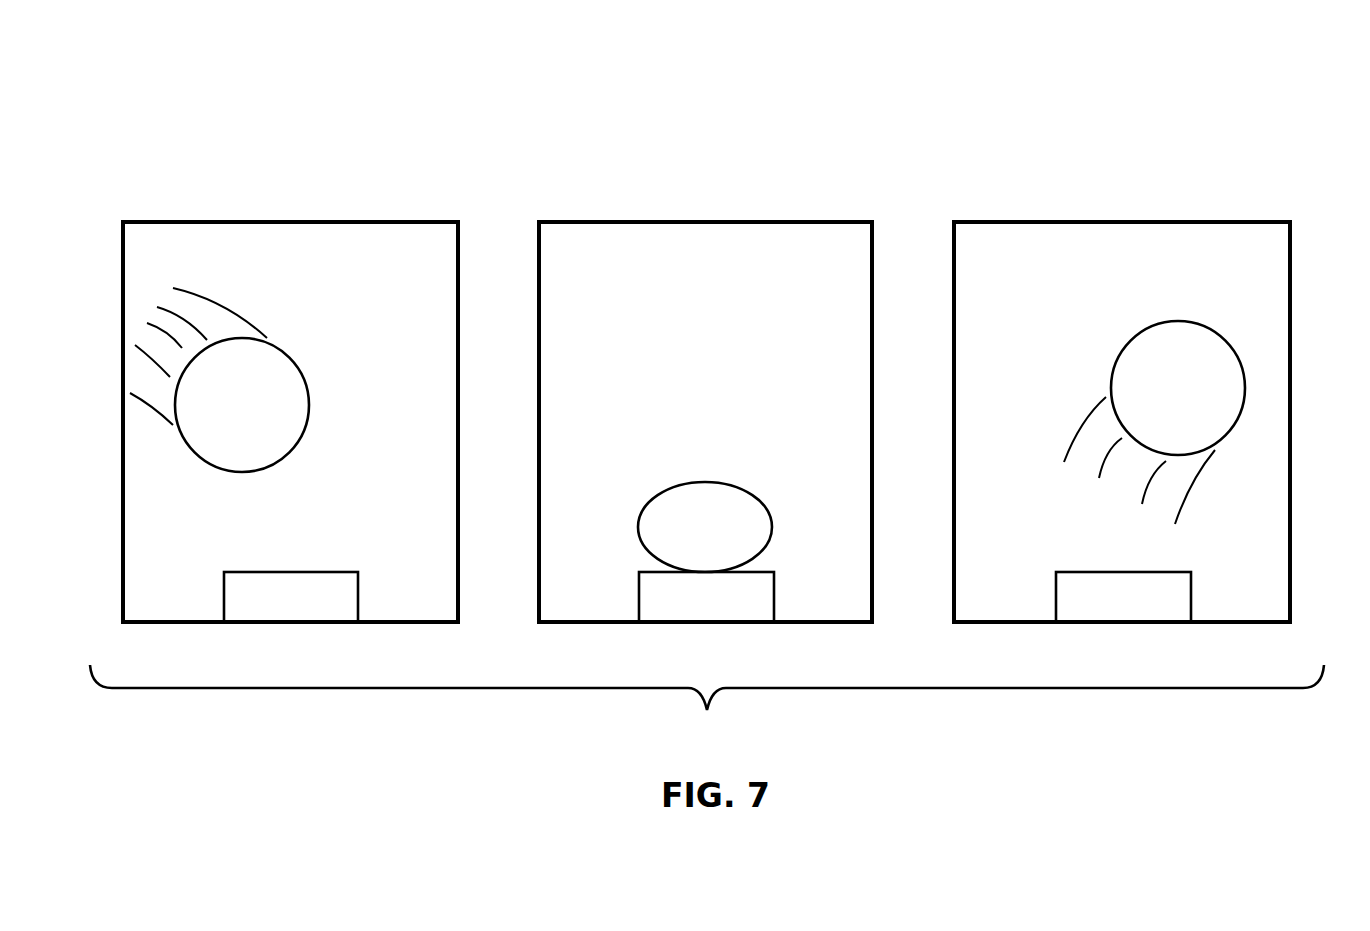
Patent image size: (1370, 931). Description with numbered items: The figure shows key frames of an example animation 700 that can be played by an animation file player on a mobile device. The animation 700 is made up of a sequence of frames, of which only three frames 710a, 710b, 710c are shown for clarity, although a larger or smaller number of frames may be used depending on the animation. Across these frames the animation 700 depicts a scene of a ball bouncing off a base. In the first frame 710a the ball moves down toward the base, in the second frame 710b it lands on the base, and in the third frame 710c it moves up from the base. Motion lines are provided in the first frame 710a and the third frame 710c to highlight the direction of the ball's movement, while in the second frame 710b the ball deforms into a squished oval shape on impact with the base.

The animation 700 is at (1131, 80).
The frame 710a is at (323, 221).
The frame 710b is at (738, 221).
The frame 710c is at (1156, 221).